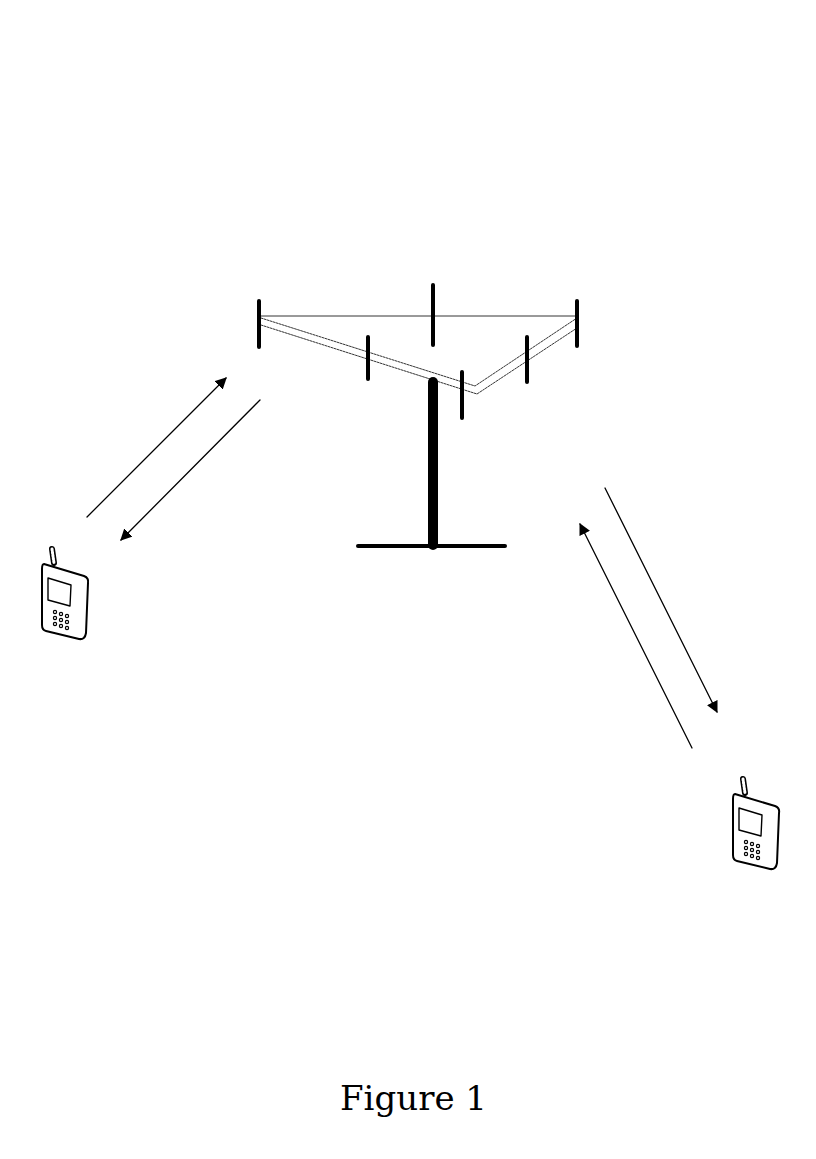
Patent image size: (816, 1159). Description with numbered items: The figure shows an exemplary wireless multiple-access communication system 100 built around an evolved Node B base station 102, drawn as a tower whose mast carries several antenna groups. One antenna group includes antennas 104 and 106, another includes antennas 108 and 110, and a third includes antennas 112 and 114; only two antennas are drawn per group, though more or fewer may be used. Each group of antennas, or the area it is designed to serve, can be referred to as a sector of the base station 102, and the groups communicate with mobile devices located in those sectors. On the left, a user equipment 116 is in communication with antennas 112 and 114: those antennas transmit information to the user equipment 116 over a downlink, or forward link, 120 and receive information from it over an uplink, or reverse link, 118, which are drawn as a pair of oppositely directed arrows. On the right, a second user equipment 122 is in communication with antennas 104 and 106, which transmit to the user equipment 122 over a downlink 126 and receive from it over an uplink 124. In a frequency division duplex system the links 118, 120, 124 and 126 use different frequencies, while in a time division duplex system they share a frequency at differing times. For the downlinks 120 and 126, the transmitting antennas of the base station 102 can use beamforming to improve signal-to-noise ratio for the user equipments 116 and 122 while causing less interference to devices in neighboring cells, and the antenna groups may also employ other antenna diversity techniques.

The wireless multiple-access communication system 100 is at (664, 93).
The eNB base station 102 is at (403, 547).
The antenna 104 is at (464, 412).
The antenna 106 is at (529, 372).
The antenna 108 is at (579, 336).
The antenna 110 is at (434, 290).
The antenna 112 is at (257, 301).
The antenna 114 is at (367, 379).
The user equipment 116 is at (85, 638).
The uplink 118 is at (163, 438).
The downlink 120 is at (143, 518).
The user equipment 122 is at (737, 861).
The uplink 124 is at (622, 612).
The downlink 126 is at (650, 575).